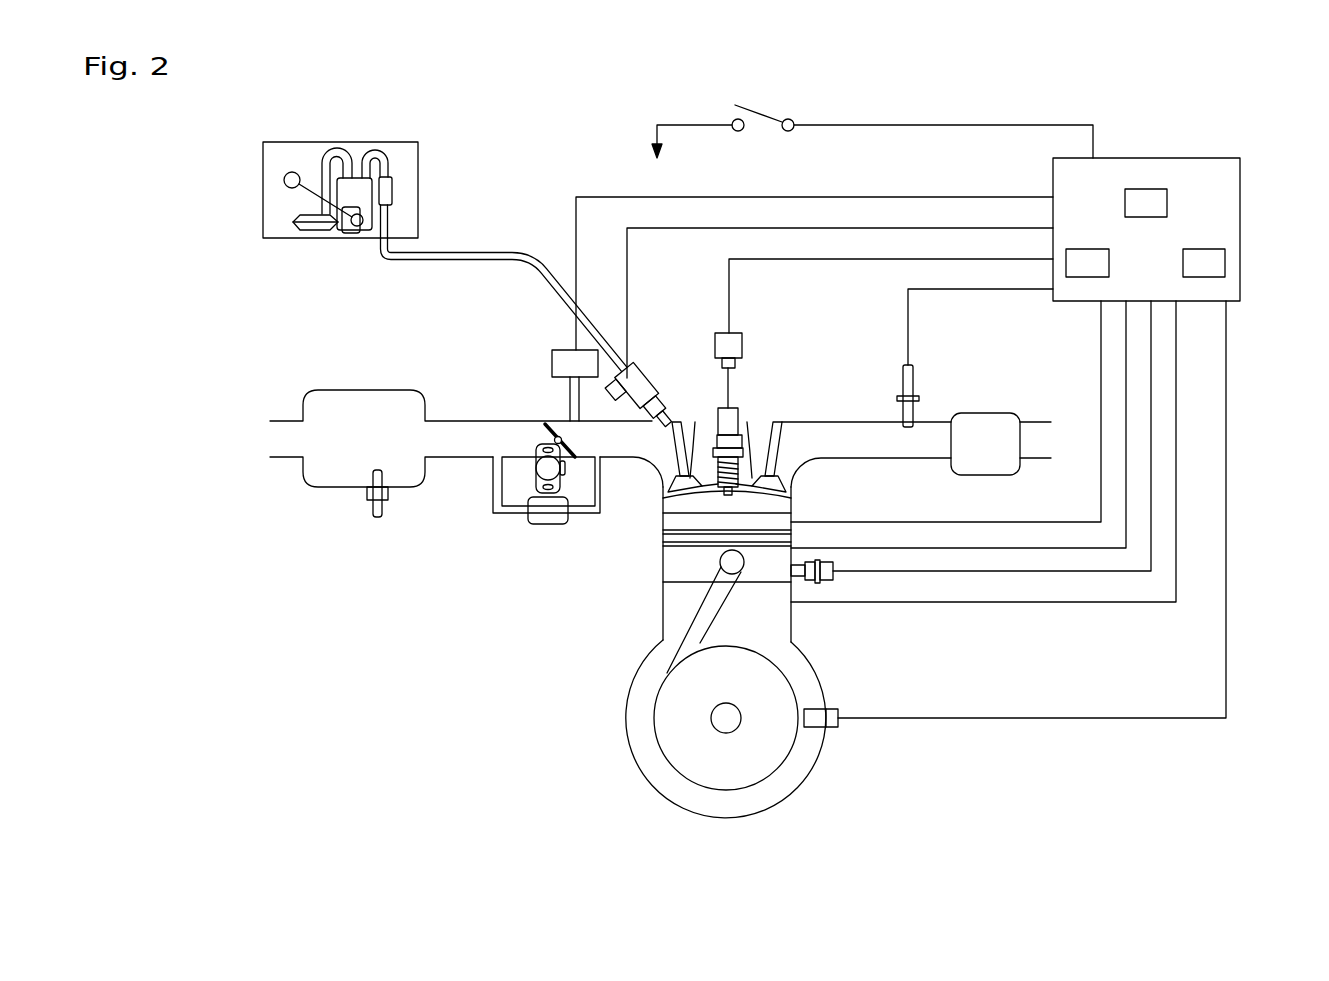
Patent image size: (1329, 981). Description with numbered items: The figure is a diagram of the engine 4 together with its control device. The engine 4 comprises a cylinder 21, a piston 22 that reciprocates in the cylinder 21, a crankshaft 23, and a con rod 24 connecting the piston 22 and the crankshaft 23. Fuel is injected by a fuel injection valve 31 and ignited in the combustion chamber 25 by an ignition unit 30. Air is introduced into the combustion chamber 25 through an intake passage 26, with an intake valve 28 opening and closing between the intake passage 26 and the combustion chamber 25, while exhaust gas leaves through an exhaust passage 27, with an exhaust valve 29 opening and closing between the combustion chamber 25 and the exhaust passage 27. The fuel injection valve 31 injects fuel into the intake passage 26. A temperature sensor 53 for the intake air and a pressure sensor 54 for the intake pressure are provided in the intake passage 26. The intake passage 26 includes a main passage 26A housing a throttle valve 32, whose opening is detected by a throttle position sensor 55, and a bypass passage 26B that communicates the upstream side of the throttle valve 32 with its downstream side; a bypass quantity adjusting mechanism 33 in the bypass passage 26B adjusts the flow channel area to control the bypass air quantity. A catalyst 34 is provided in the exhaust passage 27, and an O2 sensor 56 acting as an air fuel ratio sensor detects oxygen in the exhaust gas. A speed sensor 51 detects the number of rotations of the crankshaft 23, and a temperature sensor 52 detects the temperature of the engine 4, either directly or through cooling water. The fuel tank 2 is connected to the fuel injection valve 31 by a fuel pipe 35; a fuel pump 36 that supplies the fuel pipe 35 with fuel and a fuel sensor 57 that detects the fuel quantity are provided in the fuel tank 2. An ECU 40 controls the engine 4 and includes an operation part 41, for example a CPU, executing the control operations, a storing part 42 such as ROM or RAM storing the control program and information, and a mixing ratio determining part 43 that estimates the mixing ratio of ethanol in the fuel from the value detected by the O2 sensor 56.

The fuel tank 2 is at (291, 142).
The engine 4 is at (727, 602).
The cylinder 21 is at (662, 560).
The piston 22 is at (787, 519).
The crankshaft 23 is at (717, 780).
The con rod 24 is at (707, 610).
The combustion chamber 25 is at (673, 503).
The intake passage 26 is at (455, 435).
The main passage 26A is at (510, 433).
The bypass passage 26B is at (513, 515).
The exhaust passage 27 is at (919, 459).
The intake valve 28 is at (697, 440).
The exhaust valve 29 is at (760, 450).
The ignition unit 30 is at (742, 420).
The fuel injection valve 31 is at (652, 392).
The throttle valve 32 is at (547, 423).
The bypass quantity adjusting mechanism 33 is at (550, 527).
The catalyst 34 is at (1000, 413).
The fuel pipe 35 is at (553, 252).
The fuel pump 36 is at (395, 186).
The ECU 40 is at (1174, 200).
The operation part 41 is at (1082, 249).
The storing part 42 is at (1218, 250).
The mixing ratio determining part 43 is at (1150, 189).
The speed sensor 51 is at (833, 708).
The temperature sensor 52 is at (828, 563).
The temperature sensor 53 is at (372, 506).
The pressure sensor 54 is at (553, 350).
The throttle position sensor 55 is at (538, 468).
The O2 sensor 56 is at (904, 385).
The fuel sensor 57 is at (284, 180).